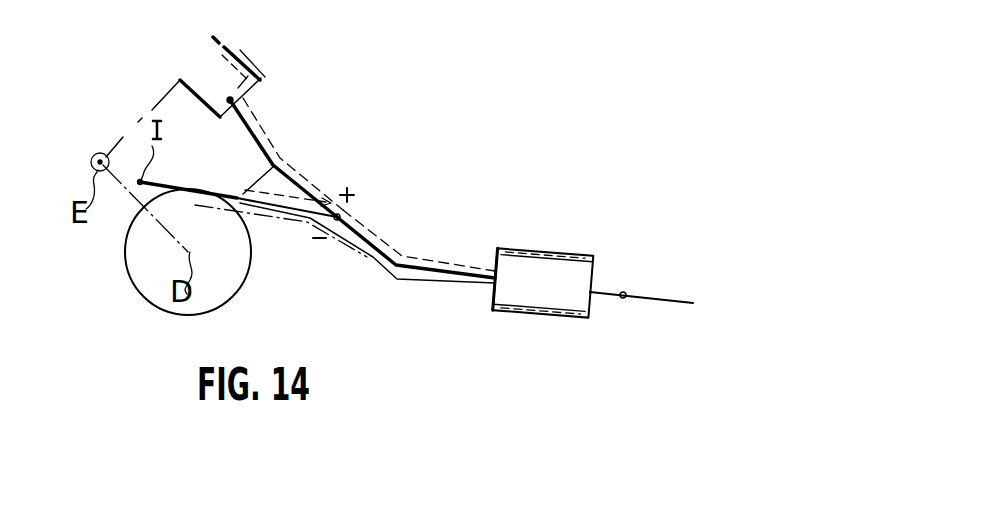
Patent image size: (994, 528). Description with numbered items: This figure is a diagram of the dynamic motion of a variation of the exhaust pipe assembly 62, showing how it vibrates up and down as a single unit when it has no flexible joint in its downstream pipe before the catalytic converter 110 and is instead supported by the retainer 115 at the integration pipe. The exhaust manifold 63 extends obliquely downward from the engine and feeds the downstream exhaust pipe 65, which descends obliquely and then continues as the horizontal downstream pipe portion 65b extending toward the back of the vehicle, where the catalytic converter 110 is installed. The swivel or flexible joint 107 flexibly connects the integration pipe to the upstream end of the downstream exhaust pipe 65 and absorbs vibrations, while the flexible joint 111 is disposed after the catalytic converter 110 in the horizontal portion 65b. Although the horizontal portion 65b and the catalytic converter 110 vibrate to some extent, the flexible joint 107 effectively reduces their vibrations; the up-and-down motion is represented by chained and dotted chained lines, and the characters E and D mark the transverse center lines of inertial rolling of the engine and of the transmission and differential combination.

The exhaust manifold 63 is at (273, 148).
The retainer 115 is at (262, 178).
The exhaust pipe assembly 62 is at (358, 176).
The flexible joint 107 is at (341, 216).
The downstream exhaust pipe 65 is at (381, 259).
The catalytic converter 110 is at (535, 246).
The downstream pipe portion 65b is at (600, 297).
The flexible joint 111 is at (626, 293).